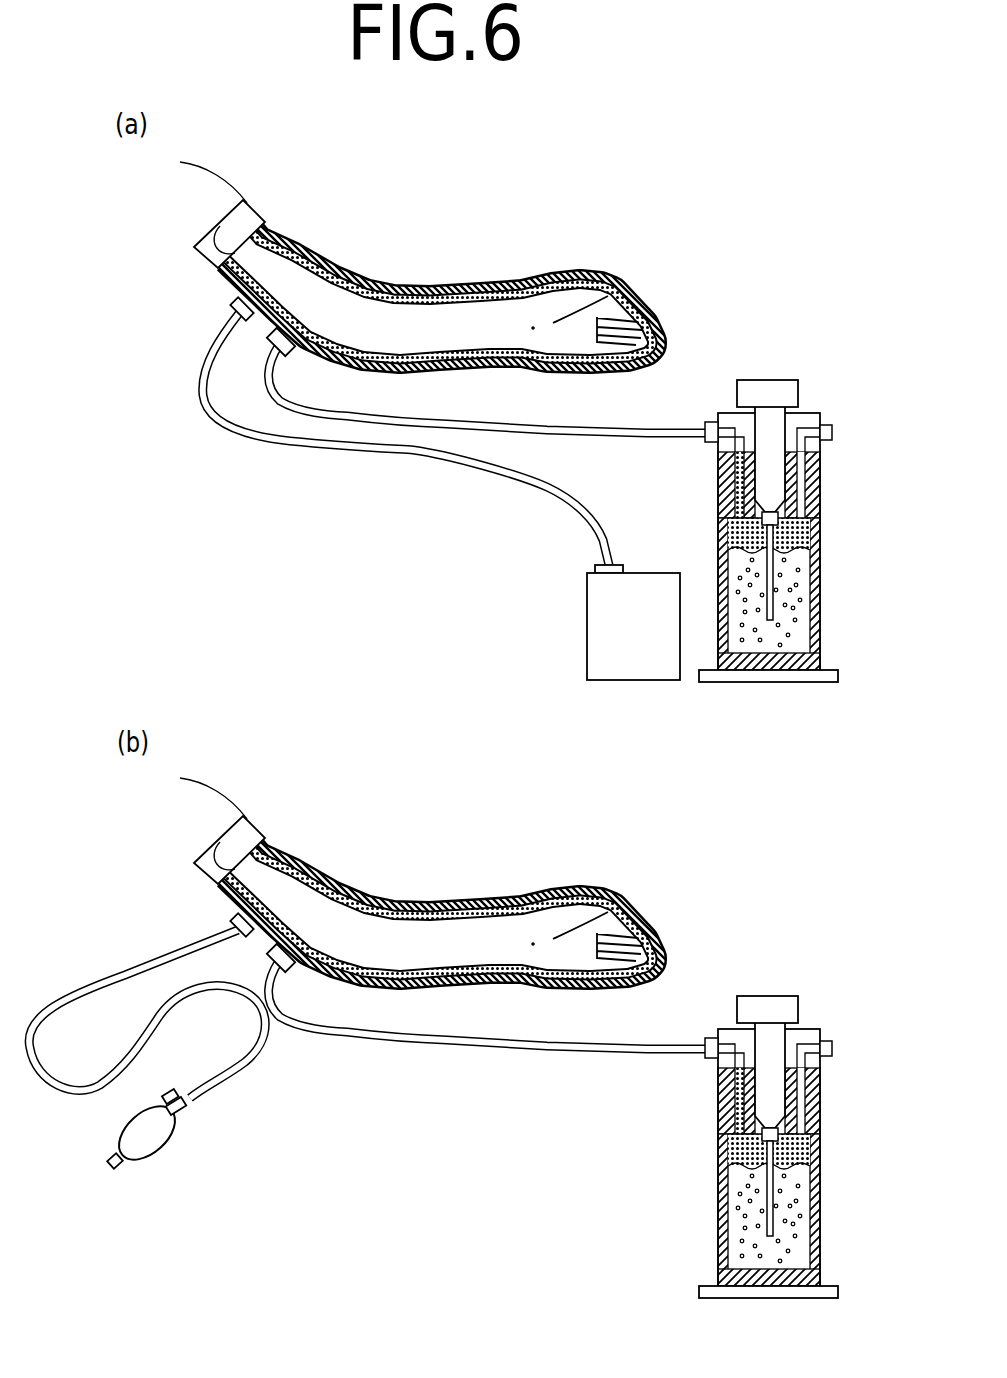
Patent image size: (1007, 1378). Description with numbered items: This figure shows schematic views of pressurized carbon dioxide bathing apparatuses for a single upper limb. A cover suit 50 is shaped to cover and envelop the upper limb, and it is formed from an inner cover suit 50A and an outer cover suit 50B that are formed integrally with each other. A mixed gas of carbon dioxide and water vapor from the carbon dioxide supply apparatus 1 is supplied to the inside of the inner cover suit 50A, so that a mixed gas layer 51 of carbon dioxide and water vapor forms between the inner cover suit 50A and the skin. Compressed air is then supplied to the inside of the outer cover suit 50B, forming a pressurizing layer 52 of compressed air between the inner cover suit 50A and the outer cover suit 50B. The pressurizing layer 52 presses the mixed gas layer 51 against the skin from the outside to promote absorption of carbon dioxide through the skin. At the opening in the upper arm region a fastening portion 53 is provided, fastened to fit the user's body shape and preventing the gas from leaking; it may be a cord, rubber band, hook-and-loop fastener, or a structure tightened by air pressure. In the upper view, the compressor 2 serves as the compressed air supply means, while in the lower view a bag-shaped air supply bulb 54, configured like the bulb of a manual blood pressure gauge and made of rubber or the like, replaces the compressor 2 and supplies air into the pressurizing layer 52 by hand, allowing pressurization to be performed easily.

The carbon dioxide supply apparatus 1 is at (785, 380).
The compressor 2 is at (643, 572).
The cover suit 50 is at (502, 569).
The inner cover suit 50A is at (650, 303).
The outer cover suit 50B is at (672, 327).
The mixed gas layer 51 is at (463, 300).
The pressurizing layer 52 is at (386, 288).
The fastening portion 53 is at (257, 200).
The air supply bulb 54 is at (180, 1153).